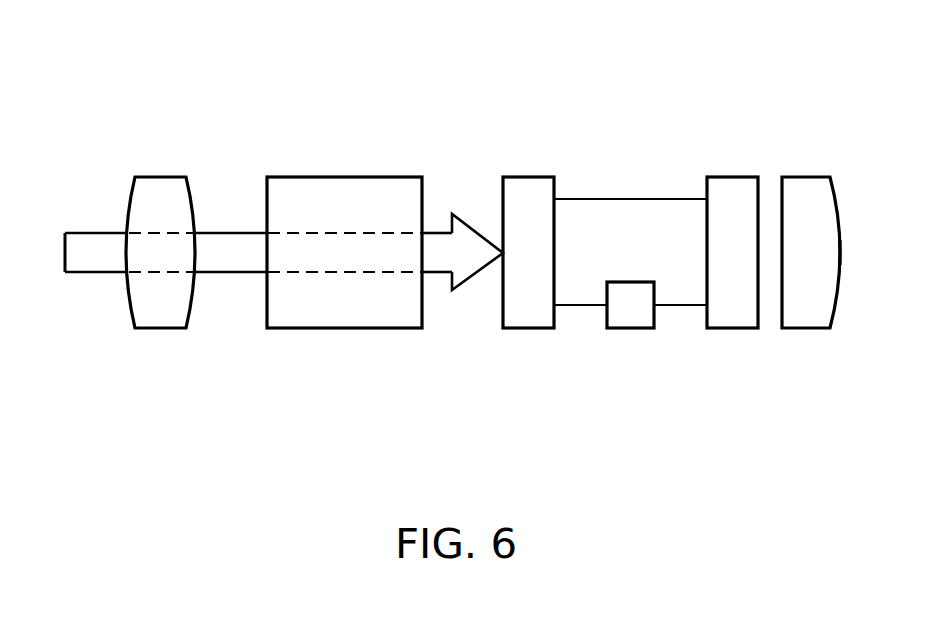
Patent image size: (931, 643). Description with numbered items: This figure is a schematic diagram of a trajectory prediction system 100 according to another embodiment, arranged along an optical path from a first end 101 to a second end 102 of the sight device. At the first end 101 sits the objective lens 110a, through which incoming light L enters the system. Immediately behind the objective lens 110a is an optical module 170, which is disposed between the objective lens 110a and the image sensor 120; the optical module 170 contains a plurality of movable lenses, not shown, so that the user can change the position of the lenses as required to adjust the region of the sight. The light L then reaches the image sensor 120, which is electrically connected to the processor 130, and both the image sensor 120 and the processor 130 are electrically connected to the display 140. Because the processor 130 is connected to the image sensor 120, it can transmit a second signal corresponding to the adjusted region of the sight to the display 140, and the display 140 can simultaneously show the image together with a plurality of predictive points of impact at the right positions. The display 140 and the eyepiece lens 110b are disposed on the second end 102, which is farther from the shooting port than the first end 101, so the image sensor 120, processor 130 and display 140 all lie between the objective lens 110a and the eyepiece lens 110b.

The trajectory prediction system 100 is at (117, 38).
The first end 101 is at (122, 143).
The second end 102 is at (796, 140).
The objective lens 110a is at (162, 328).
The eyepiece lens 110b is at (807, 328).
The light beam L is at (232, 272).
The optical module 170 is at (346, 328).
The image sensor 120 is at (529, 328).
The processor 130 is at (632, 328).
The display 140 is at (733, 328).